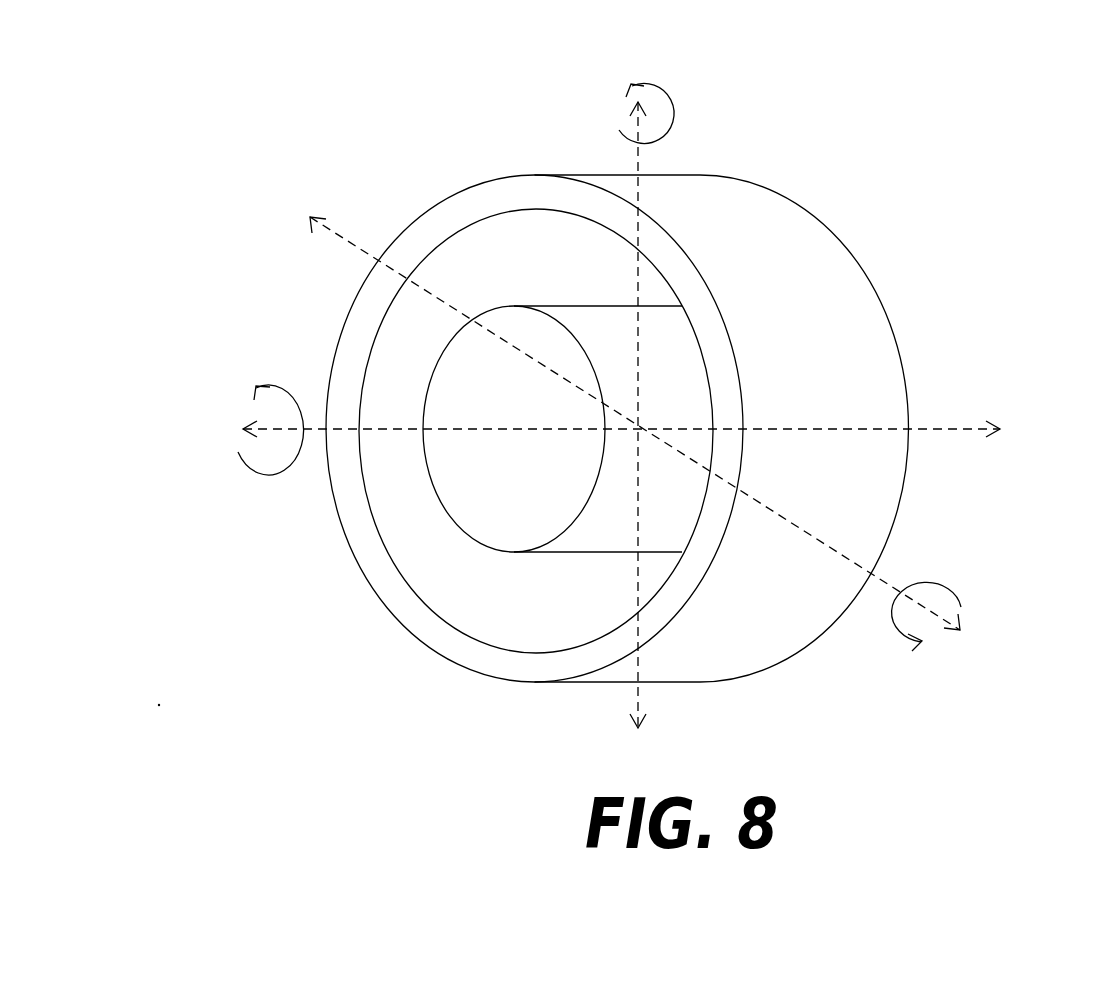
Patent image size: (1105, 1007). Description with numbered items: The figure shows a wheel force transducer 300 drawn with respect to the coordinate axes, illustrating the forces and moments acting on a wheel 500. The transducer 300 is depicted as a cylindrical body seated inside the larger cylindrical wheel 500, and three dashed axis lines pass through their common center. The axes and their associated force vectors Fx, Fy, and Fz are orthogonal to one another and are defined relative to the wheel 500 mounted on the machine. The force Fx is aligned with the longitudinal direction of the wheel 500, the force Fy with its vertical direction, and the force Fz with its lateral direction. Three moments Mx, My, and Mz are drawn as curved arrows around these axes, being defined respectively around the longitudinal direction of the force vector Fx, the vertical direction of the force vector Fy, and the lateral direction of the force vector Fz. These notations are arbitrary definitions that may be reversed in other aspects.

The wheel force transducer 300 is at (421, 389).
The wheel 500 is at (825, 215).
The force vector Fx is at (659, 441).
The force vector Fy is at (639, 375).
The force vector Fz is at (585, 428).
The moment Mx is at (926, 592).
The moment My is at (672, 113).
The moment Mz is at (271, 463).